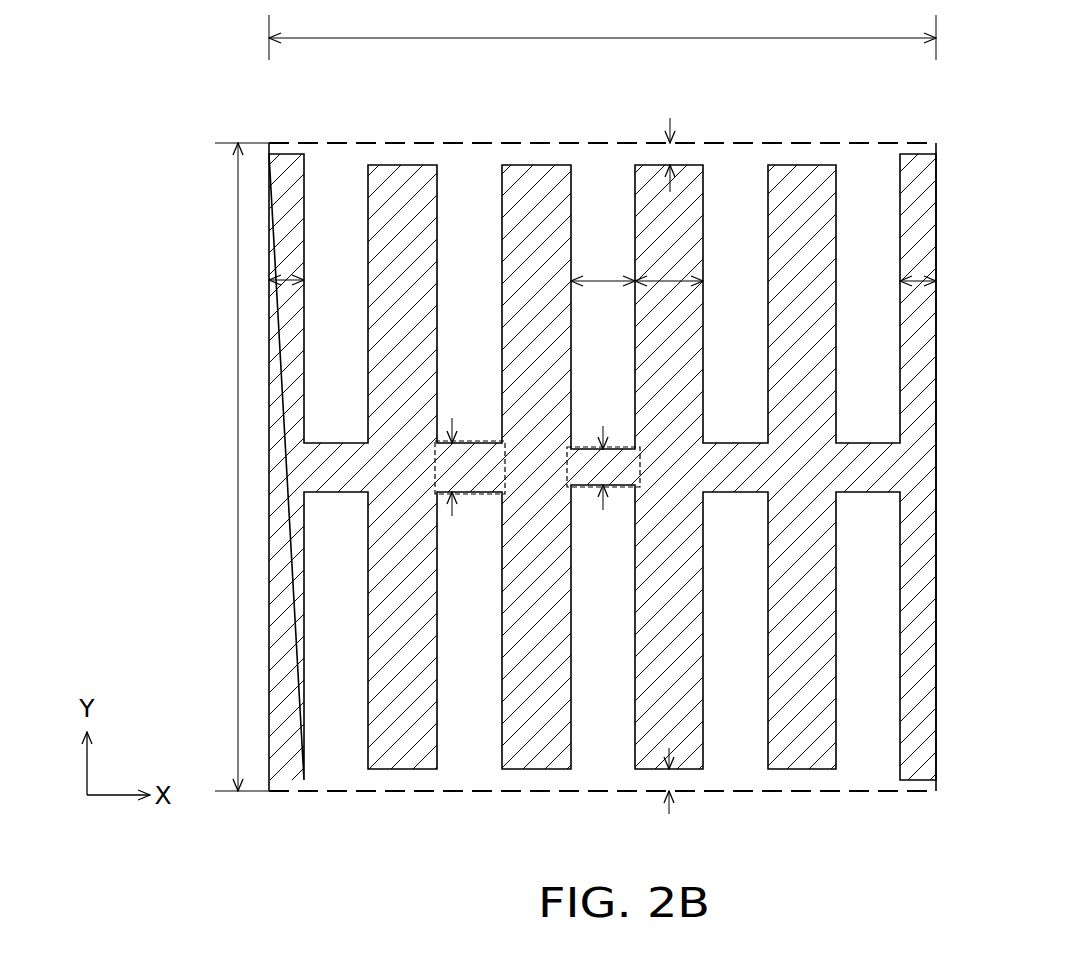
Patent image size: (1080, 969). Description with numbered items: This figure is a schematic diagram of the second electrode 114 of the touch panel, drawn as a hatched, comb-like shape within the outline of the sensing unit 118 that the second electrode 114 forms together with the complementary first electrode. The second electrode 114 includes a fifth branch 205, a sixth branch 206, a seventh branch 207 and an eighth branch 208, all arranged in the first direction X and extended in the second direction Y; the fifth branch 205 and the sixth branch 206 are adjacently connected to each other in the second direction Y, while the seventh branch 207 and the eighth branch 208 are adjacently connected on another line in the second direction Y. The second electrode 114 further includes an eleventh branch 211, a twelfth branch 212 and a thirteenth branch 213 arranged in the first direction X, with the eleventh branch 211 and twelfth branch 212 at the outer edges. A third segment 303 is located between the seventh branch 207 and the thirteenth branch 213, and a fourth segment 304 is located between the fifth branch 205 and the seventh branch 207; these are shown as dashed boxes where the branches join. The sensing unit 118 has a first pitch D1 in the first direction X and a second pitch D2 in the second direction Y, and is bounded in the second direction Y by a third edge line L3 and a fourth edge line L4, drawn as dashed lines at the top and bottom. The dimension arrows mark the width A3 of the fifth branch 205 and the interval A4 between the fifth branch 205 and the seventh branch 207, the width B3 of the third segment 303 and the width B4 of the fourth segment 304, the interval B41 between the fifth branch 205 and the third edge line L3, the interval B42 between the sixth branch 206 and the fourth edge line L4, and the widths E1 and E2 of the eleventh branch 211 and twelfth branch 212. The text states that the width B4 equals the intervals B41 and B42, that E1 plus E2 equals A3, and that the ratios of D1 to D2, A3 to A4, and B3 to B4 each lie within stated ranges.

The second electrode 114 is at (671, 460).
The sensing unit 118 is at (845, 793).
The eleventh branch 211 is at (291, 205).
The twelfth branch 212 is at (914, 205).
The thirteenth branch 213 is at (411, 205).
The seventh branch 207 is at (536, 205).
The eighth branch 208 is at (538, 735).
The fifth branch 205 is at (643, 190).
The sixth branch 206 is at (645, 745).
The third segment 303 is at (478, 440).
The fourth segment 304 is at (583, 447).
The first pitch D1 is at (602, 32).
The second pitch D2 is at (235, 467).
The width of the eleventh branch E1 is at (286, 299).
The width of the twelfth branch E2 is at (918, 299).
The width of the fifth branch A3 is at (669, 299).
The interval between the fifth branch and the seventh branch A4 is at (603, 299).
The width of the third segment B3 is at (448, 468).
The width of the fourth segment B4 is at (618, 468).
The interval between the fifth branch and the third edge line B41 is at (672, 158).
The interval between the sixth branch and the fourth edge line B42 is at (672, 783).
The third edge line L3 is at (361, 141).
The fourth edge line L4 is at (383, 794).